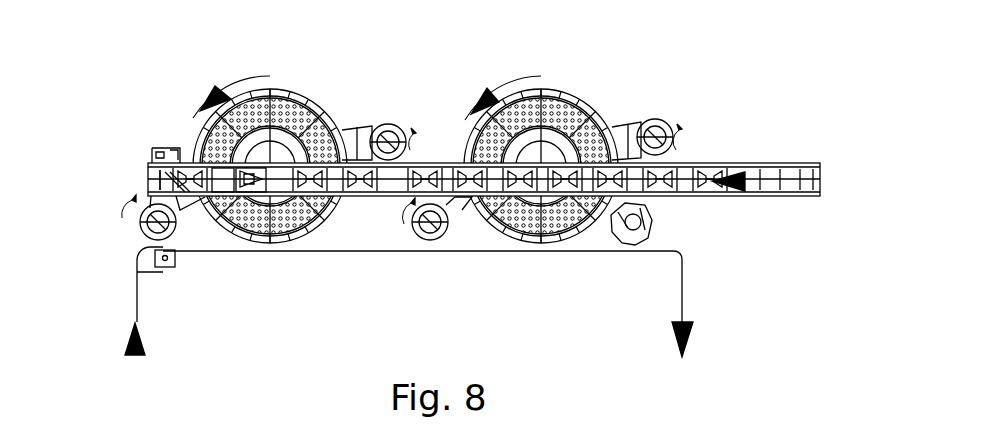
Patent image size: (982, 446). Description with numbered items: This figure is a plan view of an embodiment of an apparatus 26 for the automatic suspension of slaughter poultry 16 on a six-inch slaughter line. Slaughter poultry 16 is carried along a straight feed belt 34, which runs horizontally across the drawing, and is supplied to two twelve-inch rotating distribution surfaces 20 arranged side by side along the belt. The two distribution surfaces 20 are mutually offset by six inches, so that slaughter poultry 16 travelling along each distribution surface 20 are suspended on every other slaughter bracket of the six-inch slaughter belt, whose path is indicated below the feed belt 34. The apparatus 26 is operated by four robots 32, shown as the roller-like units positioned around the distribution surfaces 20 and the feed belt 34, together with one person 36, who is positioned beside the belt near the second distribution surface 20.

The slaughter poultry 16 is at (611, 192).
The rotating distribution surface 20 is at (300, 116).
The apparatus 26 is at (438, 94).
The robot 32 is at (670, 127).
The straight feed belt 34 is at (707, 165).
The person 36 is at (643, 233).